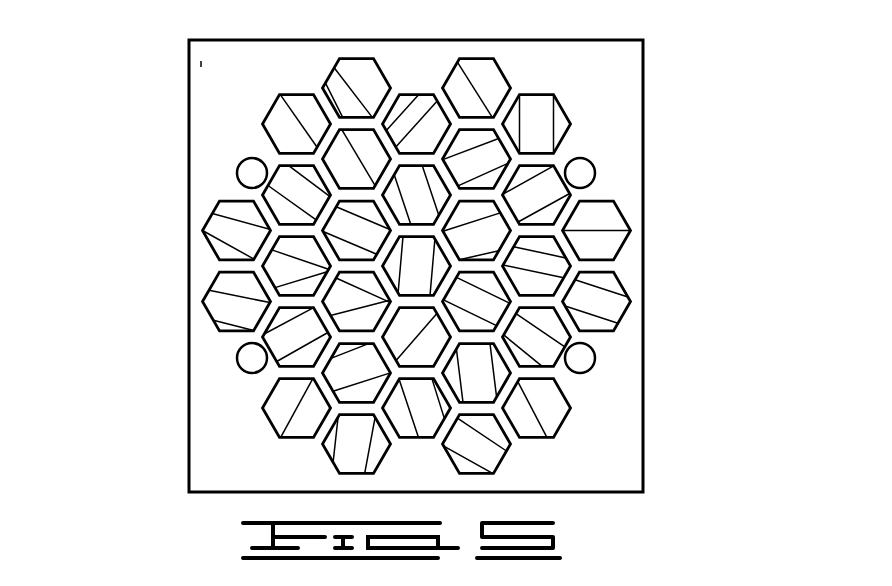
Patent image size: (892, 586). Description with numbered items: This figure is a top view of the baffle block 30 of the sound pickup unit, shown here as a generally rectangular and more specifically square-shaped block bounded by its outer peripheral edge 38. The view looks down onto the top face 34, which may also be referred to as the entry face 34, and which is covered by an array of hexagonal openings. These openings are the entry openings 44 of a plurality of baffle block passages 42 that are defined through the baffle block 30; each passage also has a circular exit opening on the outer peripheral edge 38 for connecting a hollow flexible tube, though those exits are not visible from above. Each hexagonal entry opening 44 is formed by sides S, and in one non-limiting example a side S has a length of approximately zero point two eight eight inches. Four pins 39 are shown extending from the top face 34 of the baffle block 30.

The baffle block 30 is at (394, 266).
The top face 34 is at (220, 84).
The outer peripheral edge 38 is at (340, 266).
The pins 39 is at (238, 171).
The baffle block passages 42 is at (643, 105).
The entry opening 44 is at (562, 108).
The side S is at (628, 298).